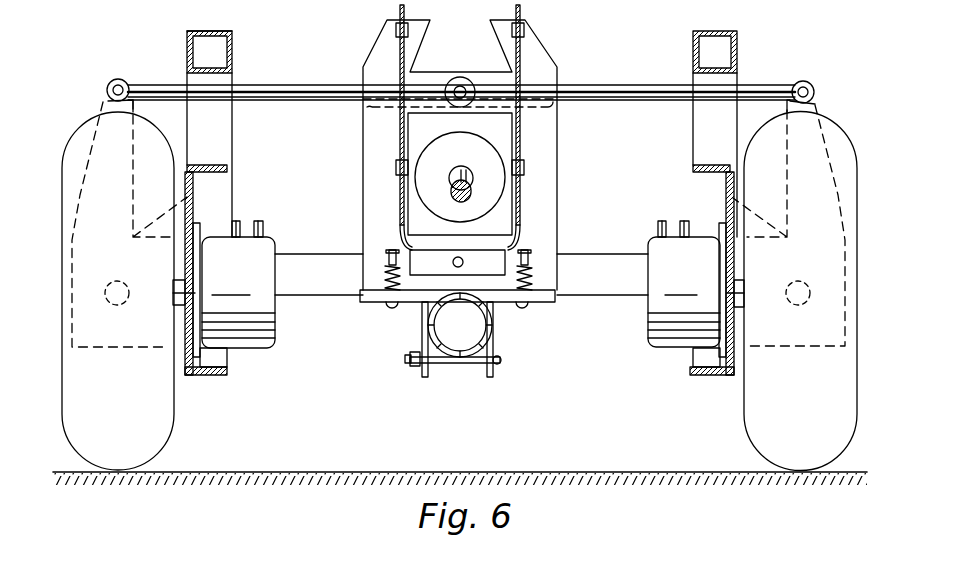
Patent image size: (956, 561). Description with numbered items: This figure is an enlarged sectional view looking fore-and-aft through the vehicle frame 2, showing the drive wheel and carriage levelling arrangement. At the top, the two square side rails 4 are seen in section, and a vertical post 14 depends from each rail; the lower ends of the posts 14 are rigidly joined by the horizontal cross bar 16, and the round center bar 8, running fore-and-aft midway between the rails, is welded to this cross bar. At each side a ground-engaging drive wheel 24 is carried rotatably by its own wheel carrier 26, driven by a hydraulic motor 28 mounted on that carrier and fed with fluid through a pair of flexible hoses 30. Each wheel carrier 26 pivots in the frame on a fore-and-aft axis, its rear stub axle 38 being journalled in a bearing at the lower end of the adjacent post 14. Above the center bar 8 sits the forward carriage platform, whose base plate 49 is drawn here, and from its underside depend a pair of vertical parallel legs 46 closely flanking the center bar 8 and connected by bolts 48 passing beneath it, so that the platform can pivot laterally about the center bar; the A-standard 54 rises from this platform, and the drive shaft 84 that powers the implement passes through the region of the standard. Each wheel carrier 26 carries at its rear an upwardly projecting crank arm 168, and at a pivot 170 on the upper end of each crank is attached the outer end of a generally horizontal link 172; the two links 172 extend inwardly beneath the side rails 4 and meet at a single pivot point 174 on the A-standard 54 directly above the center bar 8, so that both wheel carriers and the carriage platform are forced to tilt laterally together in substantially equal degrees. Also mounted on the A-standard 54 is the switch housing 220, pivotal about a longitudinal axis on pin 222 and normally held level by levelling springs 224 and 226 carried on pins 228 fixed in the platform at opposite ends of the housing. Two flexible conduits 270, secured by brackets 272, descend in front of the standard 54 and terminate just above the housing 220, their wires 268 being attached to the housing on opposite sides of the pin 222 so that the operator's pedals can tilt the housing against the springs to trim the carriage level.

The vehicle frame 2 is at (192, 27).
The side rails 4 is at (207, 31).
The center bar 8 is at (442, 350).
The vertical posts 14 is at (222, 126).
The cross bar 16 is at (606, 295).
The drive wheels 24 is at (62, 410).
The wheel carrier 26 is at (214, 376).
The hydraulic motor 28 is at (257, 345).
The flexible hoses 30 is at (258, 221).
The stub axle 38 is at (127, 303).
The vertical parallel legs 46 is at (423, 375).
The bolts 48 is at (472, 364).
The base plate 49 is at (363, 300).
The A-standard 54 is at (548, 62).
The drive shaft 84 is at (458, 185).
The crank arm 168 is at (108, 101).
The pivot 170 is at (124, 73).
The link 172 is at (298, 85).
The pivot point 174 is at (462, 78).
The switch housing 220 is at (490, 256).
The pin 222 is at (462, 260).
The levelling spring 224 is at (385, 277).
The levelling spring 226 is at (534, 277).
The pins 228 is at (386, 252).
The wire 268 is at (400, 238).
The flexible conduit 270 is at (400, 135).
The brackets 272 is at (396, 28).